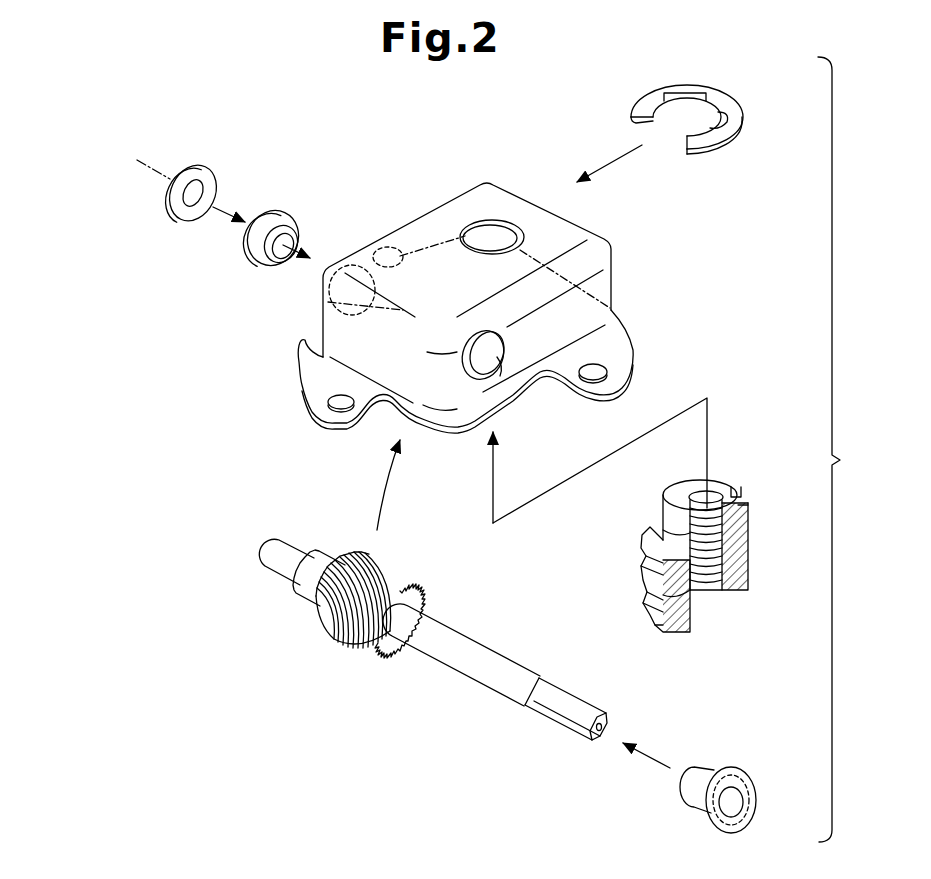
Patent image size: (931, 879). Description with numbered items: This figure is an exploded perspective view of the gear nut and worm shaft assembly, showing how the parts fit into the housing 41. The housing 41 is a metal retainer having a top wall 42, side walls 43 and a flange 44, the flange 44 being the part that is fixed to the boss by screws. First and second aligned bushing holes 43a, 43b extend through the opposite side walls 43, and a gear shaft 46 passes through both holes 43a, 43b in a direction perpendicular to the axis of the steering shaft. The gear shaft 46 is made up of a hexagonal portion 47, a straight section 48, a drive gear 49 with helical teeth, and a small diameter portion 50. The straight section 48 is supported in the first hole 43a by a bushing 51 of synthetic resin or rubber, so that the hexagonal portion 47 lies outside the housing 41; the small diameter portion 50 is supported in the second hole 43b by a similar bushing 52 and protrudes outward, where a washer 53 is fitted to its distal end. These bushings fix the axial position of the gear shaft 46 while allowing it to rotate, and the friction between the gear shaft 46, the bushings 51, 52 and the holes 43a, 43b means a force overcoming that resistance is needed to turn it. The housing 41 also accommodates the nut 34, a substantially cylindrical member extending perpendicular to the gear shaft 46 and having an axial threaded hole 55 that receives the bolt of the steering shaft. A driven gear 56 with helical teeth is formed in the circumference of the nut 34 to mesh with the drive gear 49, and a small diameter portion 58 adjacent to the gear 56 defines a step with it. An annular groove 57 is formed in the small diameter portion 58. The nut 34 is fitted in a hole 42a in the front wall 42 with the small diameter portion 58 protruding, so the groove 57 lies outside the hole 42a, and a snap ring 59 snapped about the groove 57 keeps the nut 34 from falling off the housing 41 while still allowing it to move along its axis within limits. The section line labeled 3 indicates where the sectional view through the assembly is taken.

The section line 3- 3 is at (137, 160).
The nut 34 is at (695, 571).
The housing 41 is at (477, 183).
The top wall 42 is at (500, 197).
The hole 42a is at (512, 219).
The side walls 43 is at (523, 338).
The first bushing hole 43a is at (497, 357).
The second bushing hole 43b is at (328, 301).
The flange 44 is at (313, 380).
The gear shaft 46 is at (436, 632).
The hexagonal portion 47 is at (582, 697).
The straight section 48 is at (493, 653).
The drive gear 49 is at (380, 563).
The small diameter portion 50 is at (287, 553).
The bushing 51 is at (757, 782).
The bushing 52 is at (297, 217).
The washer 53 is at (207, 177).
The threaded hole 55 is at (715, 577).
The driven gear 56 is at (637, 587).
The annular groove 57 is at (737, 493).
The small diameter portion 58 is at (740, 507).
The snap ring 59 is at (713, 140).